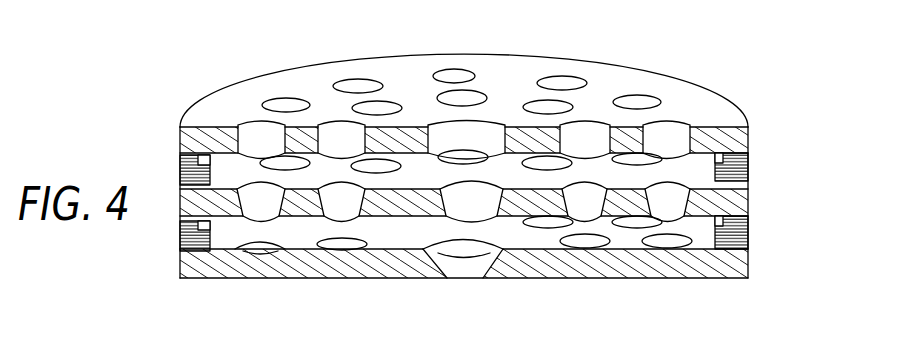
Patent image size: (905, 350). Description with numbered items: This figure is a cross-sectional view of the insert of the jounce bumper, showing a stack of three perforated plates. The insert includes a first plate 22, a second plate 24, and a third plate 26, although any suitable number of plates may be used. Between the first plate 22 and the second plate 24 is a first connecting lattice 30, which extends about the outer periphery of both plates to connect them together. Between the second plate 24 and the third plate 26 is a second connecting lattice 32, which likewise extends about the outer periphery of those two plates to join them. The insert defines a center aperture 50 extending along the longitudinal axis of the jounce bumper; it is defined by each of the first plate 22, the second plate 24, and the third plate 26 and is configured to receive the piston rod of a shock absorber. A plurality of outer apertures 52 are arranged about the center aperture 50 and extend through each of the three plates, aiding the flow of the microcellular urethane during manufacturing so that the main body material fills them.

The first plate 22 is at (733, 137).
The second plate 24 is at (737, 195).
The third plate 26 is at (733, 255).
The first connecting lattice 30 is at (182, 163).
The second connecting lattice 32 is at (180, 248).
The center aperture 50 is at (452, 128).
The outer apertures 52 is at (281, 102).